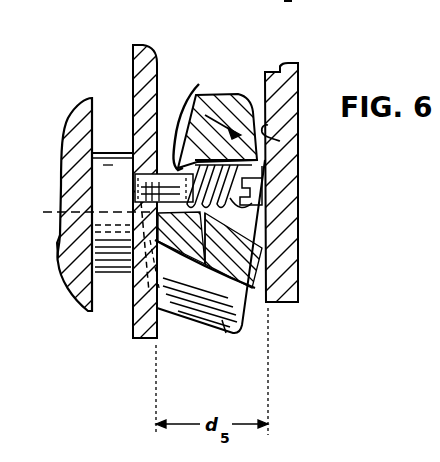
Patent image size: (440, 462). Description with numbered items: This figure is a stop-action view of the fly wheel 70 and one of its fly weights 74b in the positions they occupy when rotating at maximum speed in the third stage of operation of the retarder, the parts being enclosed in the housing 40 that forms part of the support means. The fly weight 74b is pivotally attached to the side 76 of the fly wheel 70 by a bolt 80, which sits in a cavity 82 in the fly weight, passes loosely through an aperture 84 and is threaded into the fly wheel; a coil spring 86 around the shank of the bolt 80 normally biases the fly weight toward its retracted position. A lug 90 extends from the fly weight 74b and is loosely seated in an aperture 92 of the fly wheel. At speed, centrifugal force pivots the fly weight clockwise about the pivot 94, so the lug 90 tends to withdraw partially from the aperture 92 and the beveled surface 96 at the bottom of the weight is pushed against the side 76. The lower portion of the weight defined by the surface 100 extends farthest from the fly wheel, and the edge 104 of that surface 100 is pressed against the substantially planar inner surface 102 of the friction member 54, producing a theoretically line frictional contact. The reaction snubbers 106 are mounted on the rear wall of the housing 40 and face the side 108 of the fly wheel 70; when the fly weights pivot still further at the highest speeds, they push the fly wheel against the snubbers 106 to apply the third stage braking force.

The housing 40 is at (78, 130).
The friction member 54 is at (292, 186).
The fly wheel 70 is at (135, 342).
The fly weight 74b is at (226, 333).
The side of fly wheel 76 is at (157, 85).
The bolt 80 is at (245, 208).
The cavity 82 is at (240, 231).
The aperture 84 is at (194, 90).
The coil spring 86 is at (204, 262).
The lug 90 is at (43, 212).
The aperture of fly wheel 92 is at (62, 251).
The pivot 94 is at (138, 275).
The beveled surface 96 is at (155, 296).
The surface 100 is at (240, 322).
The inner surface of friction member 102 is at (280, 141).
The edge of surface 104 is at (252, 253).
The reaction snubbers 106 is at (100, 165).
The side of fly wheel 108 is at (133, 67).